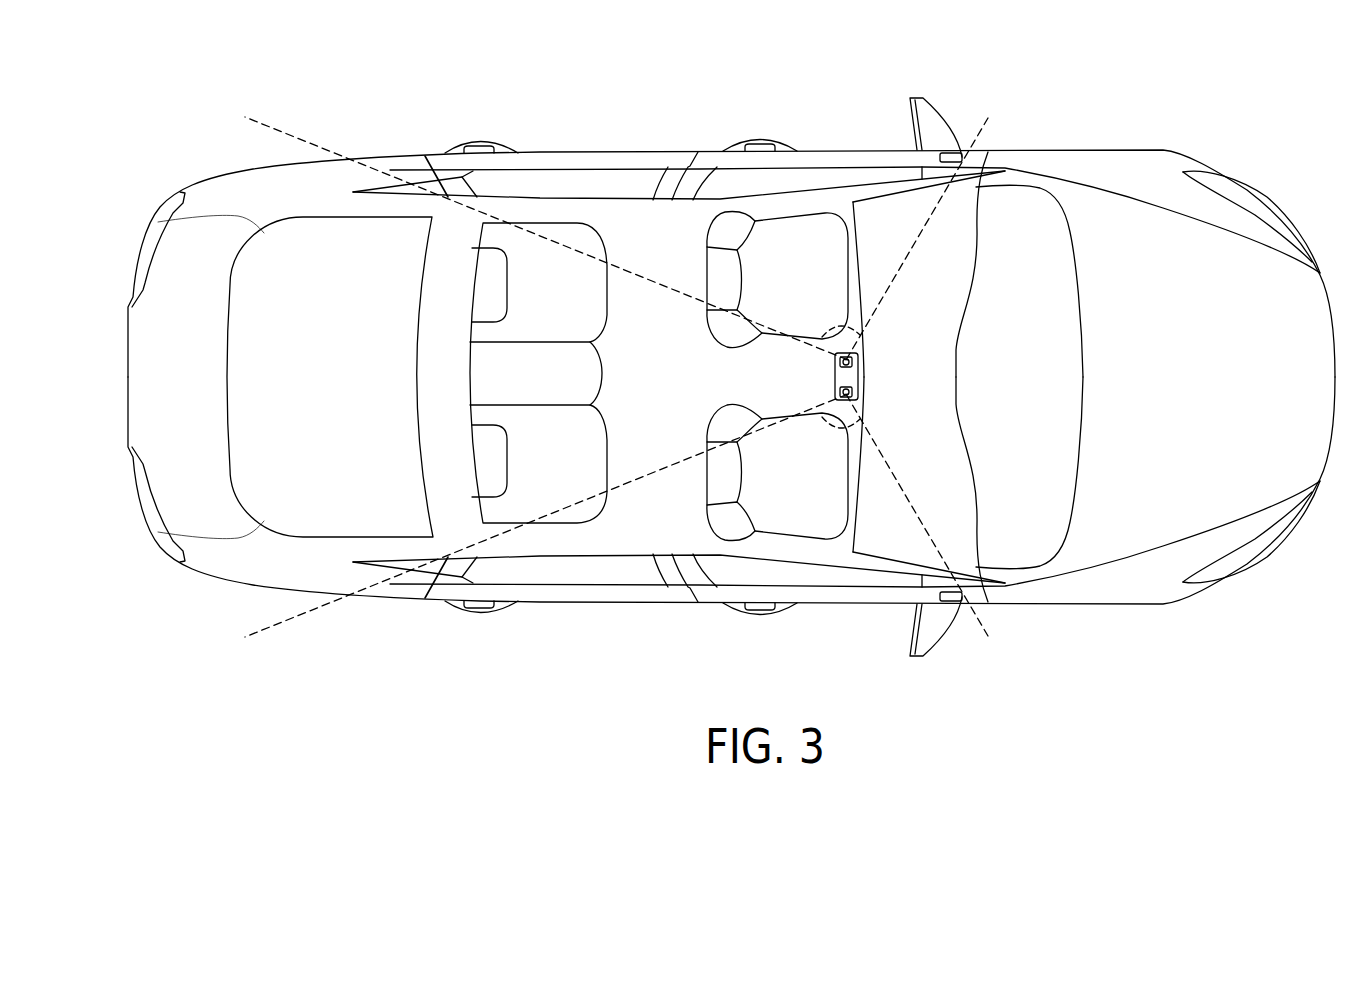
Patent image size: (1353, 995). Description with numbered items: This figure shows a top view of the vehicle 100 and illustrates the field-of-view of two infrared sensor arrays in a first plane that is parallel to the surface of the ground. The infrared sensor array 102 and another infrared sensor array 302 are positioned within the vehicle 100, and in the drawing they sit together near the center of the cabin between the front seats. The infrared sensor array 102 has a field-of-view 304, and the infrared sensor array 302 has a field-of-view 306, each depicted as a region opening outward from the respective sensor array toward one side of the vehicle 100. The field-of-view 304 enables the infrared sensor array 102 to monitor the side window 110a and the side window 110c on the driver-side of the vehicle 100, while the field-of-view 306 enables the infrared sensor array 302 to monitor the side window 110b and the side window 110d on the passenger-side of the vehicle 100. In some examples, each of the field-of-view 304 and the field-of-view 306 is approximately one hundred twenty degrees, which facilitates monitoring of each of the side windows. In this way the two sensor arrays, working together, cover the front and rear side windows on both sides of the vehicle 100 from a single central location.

The vehicle 100 is at (400, 83).
The infrared sensor array 102 is at (853, 362).
The side window 110a is at (813, 178).
The side window 110b is at (813, 570).
The side window 110c is at (570, 178).
The side window 110d is at (570, 570).
The infrared sensor array 302 is at (853, 392).
The field-of-view 304 is at (838, 327).
The field-of-view 306 is at (838, 424).